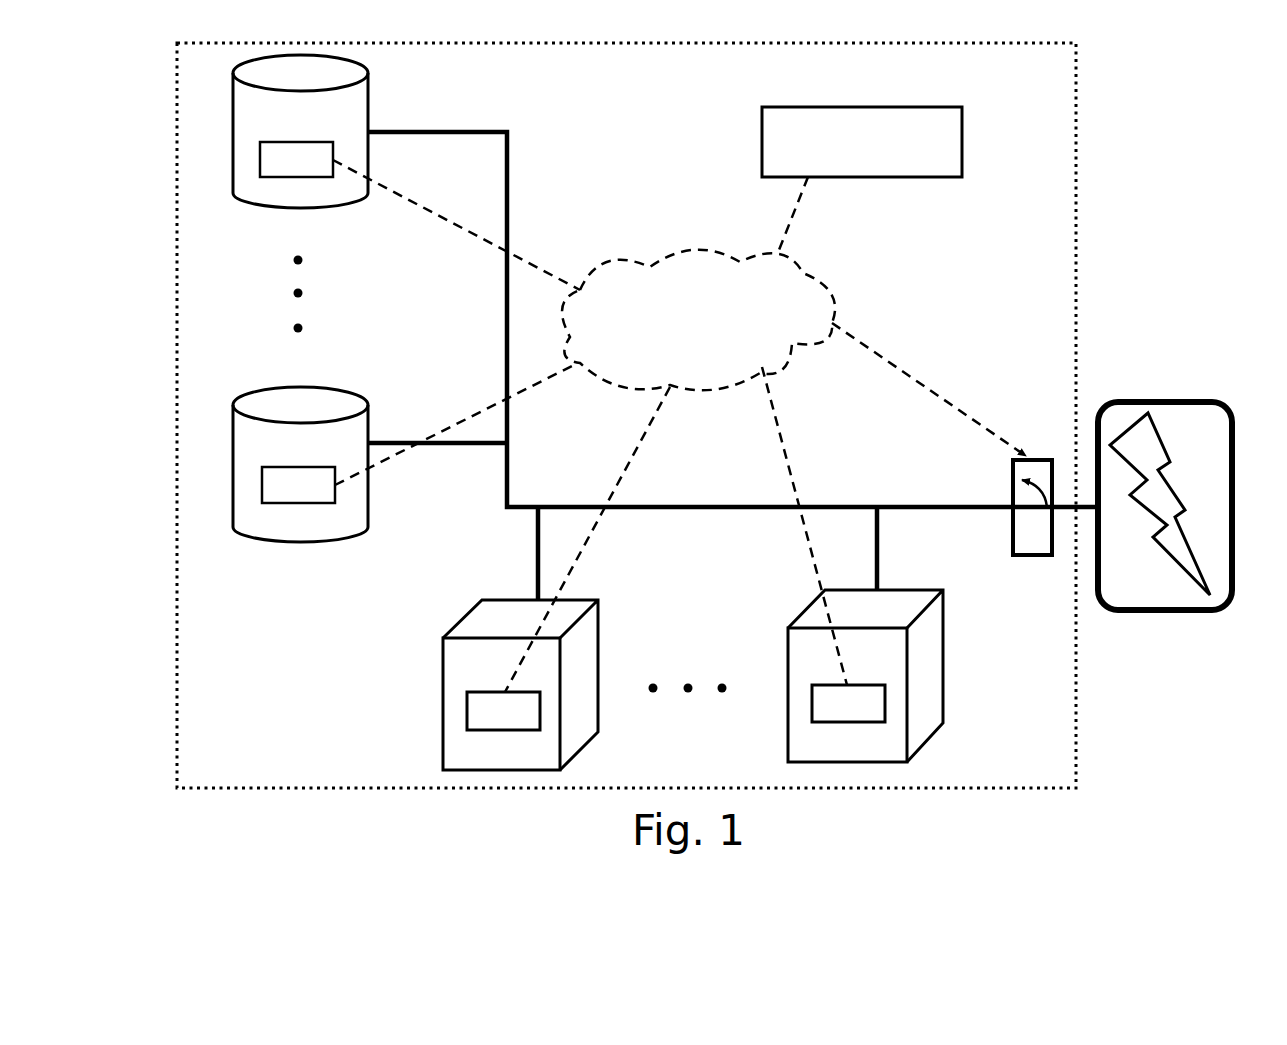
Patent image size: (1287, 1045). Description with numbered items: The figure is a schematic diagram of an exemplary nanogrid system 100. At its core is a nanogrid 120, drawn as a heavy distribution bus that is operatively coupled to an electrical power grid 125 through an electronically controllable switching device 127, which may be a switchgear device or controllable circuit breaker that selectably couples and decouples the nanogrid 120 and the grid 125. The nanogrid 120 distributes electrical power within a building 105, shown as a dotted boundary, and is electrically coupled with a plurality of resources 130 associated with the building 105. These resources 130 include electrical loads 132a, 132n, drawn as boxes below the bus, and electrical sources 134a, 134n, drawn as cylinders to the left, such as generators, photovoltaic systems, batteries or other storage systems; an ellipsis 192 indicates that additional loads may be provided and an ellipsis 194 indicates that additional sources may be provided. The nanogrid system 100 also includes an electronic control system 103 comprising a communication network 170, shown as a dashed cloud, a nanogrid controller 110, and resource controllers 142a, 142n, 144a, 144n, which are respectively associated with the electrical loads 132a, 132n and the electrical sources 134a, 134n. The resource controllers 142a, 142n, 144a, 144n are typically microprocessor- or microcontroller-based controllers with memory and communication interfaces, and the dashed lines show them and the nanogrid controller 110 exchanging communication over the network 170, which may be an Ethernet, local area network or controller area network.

The nanogrid system 100 is at (1122, 139).
The electronic control system 103 is at (996, 271).
The building 105 is at (1076, 313).
The nanogrid controller 110 is at (860, 178).
The nanogrid 120 is at (732, 512).
The electrical power grid 125 is at (1180, 400).
The electronically controllable switching device 127 is at (1013, 488).
The resources 130 is at (308, 694).
The electrical load 132a is at (443, 660).
The electrical load 132n is at (945, 620).
The electrical source 134a is at (292, 205).
The electrical source 134n is at (300, 541).
The resource controller 142a is at (467, 718).
The resource controller 142n is at (885, 705).
The resource controller 144a is at (260, 176).
The resource controller 144n is at (265, 503).
The communication network 170 is at (685, 260).
The ellipsis 192 is at (687, 692).
The ellipsis 194 is at (292, 294).